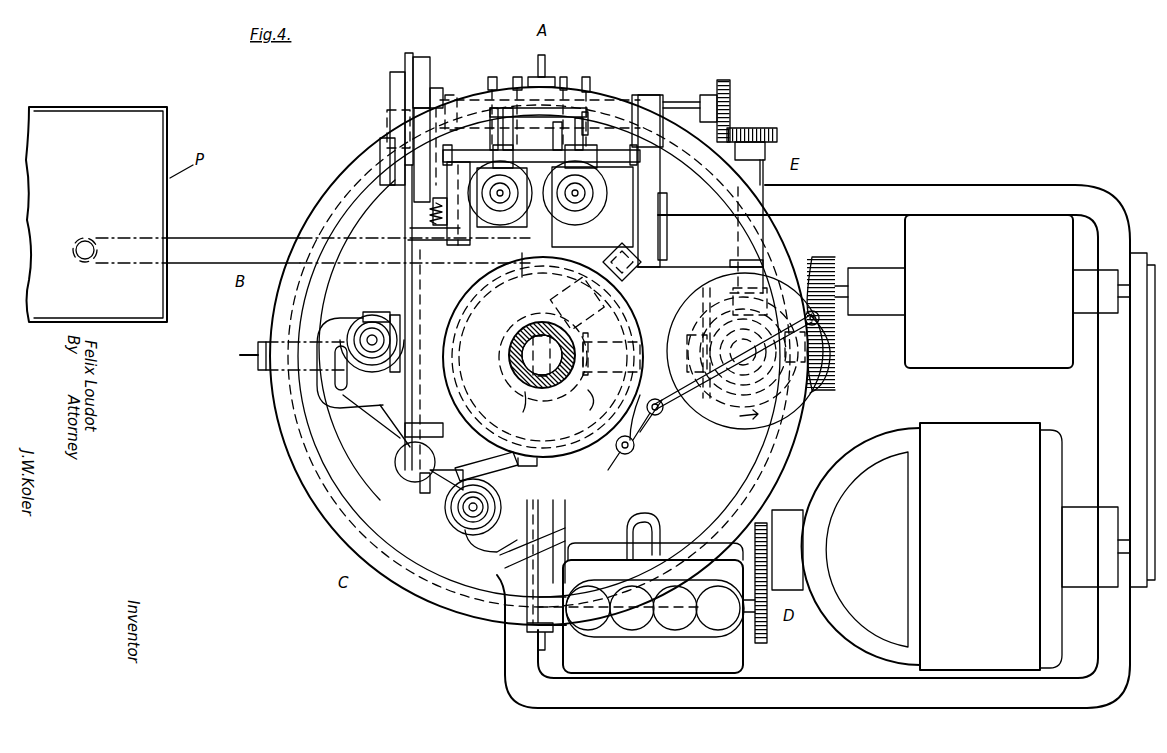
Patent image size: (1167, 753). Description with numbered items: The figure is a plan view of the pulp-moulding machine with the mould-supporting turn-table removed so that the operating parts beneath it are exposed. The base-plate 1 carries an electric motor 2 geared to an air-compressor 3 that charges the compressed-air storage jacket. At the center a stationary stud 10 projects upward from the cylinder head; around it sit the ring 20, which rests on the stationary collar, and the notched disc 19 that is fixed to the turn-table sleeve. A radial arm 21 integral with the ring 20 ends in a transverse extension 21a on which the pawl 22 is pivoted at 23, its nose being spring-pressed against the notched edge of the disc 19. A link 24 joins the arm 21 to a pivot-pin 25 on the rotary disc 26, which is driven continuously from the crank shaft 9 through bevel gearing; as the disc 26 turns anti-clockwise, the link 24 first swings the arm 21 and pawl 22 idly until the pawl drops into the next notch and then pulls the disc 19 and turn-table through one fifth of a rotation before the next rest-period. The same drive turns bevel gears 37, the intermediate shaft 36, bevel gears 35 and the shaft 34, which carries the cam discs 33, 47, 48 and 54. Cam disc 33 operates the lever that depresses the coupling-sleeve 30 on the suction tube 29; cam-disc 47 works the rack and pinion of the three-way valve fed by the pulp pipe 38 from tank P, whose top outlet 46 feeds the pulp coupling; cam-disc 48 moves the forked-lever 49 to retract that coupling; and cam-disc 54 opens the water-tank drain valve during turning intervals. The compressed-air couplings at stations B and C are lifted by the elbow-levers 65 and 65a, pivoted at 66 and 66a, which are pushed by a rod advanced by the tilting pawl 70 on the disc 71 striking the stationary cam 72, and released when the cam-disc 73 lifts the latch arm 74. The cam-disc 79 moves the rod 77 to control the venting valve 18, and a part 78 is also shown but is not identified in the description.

The base-plate 1 is at (990, 192).
The electric motor 2 is at (966, 546).
The air-compressor 3 is at (650, 660).
The shaft 9 is at (729, 364).
The stationary stud 10 is at (512, 353).
The valve 18 is at (398, 475).
The notched disc 19 is at (641, 324).
The ring 20 is at (534, 410).
The radial arm 21 is at (578, 403).
The transverse extension 21a is at (653, 420).
The pawl 22 is at (629, 445).
The pivot 23 is at (616, 450).
The link 24 is at (700, 420).
The pivot-pin 25 is at (820, 325).
The rotary disc 26 is at (815, 400).
The tube 29 is at (596, 200).
The coupling-sleeve 30 is at (598, 215).
The cam disc 33 is at (588, 77).
The shaft 34 is at (690, 100).
The bevel gears 35 is at (735, 120).
The intermediate shaft 36 is at (745, 235).
The bevel gears 37 is at (780, 265).
The pipe 38 is at (260, 238).
The top outlet 46 is at (529, 273).
The cam-disc 47 is at (564, 77).
The cam-disc 48 is at (492, 77).
The forked-lever 49 is at (540, 134).
The cam-disc 54 is at (518, 77).
The elbow-lever 65 is at (365, 335).
The elbow-lever 65a is at (450, 515).
The pivot 66 is at (372, 320).
The pivot 66a is at (486, 467).
The tilting pawl 70 is at (437, 88).
The disc 71 is at (425, 57).
The stationary cam 72 is at (452, 95).
The cam-disc 73 is at (409, 53).
The arm 74 is at (439, 199).
The rod 77 is at (405, 272).
The block 78 is at (387, 140).
The cam-disc 79 is at (398, 72).